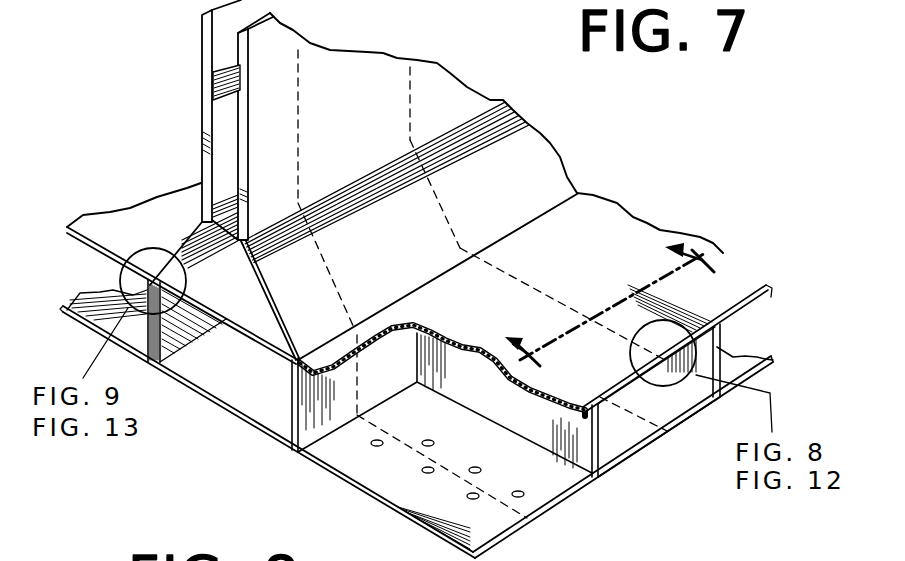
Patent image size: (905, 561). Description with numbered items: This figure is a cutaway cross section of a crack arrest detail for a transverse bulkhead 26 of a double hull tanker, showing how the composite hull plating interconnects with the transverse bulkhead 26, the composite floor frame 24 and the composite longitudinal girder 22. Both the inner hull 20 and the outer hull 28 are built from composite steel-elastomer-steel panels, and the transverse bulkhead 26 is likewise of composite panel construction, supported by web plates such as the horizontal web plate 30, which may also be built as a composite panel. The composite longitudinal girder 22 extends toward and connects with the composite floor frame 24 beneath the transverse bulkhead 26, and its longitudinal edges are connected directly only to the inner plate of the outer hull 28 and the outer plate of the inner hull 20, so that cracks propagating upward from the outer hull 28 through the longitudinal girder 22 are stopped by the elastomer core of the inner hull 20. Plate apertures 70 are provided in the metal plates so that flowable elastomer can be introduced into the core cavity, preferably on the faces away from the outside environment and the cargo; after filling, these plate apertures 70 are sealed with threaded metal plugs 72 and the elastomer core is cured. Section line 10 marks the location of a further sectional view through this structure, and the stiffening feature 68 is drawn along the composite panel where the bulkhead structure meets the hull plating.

The section line 10- 10 is at (631, 319).
The inner hull 20 is at (627, 223).
The composite longitudinal girder 22 is at (598, 440).
The composite floor frame 24 is at (312, 408).
The transverse bulkhead 26 is at (393, 68).
The outer hull 28 is at (553, 507).
The horizontal web plate 30 is at (230, 90).
The stiffening rib 68 is at (523, 147).
The plate apertures 70 is at (470, 495).
The threaded metal plugs 72 is at (518, 490).